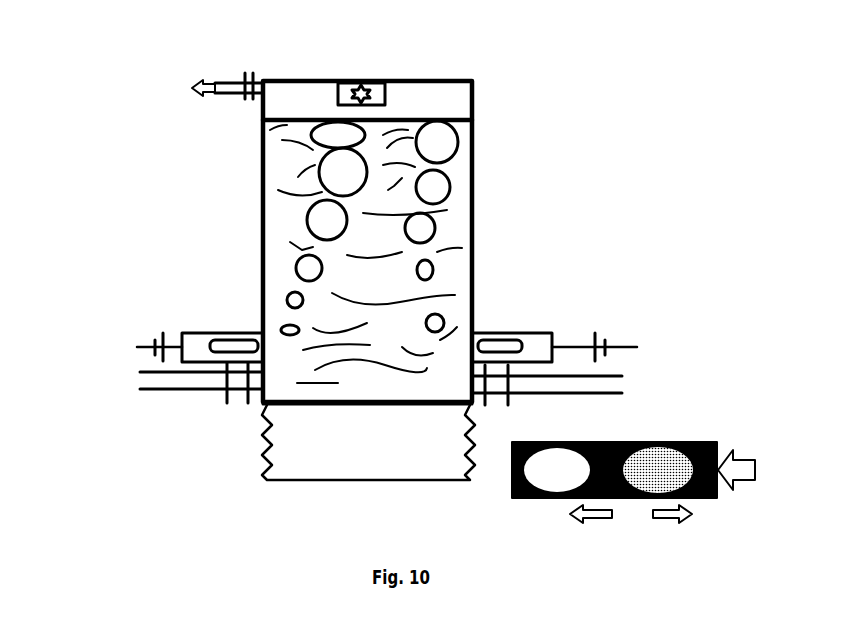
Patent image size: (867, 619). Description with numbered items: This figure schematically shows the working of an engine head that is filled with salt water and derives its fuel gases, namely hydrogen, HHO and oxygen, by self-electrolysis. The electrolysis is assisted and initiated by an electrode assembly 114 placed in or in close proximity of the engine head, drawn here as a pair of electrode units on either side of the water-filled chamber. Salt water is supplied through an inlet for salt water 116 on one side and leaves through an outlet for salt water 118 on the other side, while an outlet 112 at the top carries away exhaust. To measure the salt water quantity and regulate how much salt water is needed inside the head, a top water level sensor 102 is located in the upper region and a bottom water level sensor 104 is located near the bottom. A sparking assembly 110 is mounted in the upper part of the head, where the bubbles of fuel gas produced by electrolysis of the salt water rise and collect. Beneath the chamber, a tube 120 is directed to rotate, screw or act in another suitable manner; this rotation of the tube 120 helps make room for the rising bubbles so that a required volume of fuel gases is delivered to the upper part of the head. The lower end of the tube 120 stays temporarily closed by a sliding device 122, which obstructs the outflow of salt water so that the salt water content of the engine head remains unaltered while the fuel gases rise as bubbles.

The top water level sensor 102 is at (466, 88).
The bottom water level sensor 104 is at (476, 404).
The sparking assembly 110 is at (362, 82).
The outlet for exhaust 112 is at (205, 86).
The electrode assembly 114 is at (188, 330).
The inlet for salt water 116 is at (132, 381).
The outlet for salt water 118 is at (662, 384).
The tube 120 is at (262, 407).
The sliding device 122 is at (266, 455).